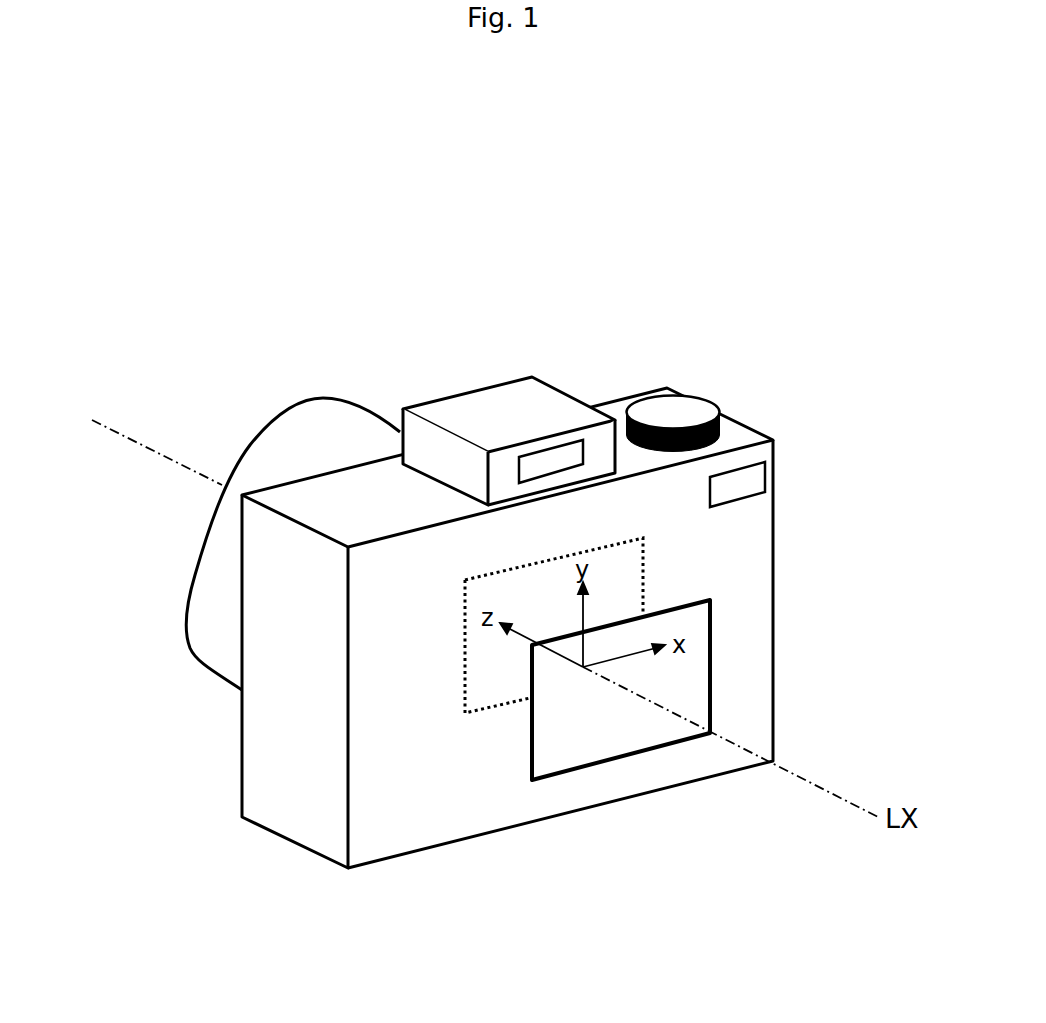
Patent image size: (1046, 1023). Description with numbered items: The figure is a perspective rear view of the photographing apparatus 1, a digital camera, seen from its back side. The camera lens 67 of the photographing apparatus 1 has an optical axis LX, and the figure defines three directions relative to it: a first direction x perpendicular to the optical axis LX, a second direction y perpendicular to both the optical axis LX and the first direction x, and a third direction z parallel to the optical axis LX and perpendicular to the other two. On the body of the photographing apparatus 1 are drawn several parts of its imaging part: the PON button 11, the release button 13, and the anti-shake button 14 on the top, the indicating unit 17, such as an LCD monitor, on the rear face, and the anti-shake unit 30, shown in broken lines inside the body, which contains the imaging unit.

The photographing apparatus 1 is at (515, 593).
The PON button 11 is at (774, 467).
The release button 13 is at (700, 397).
The anti-shake button 14 is at (531, 453).
The indicating unit 17 is at (712, 619).
The anti-shake unit 30 is at (645, 536).
The camera lens 67 is at (359, 411).